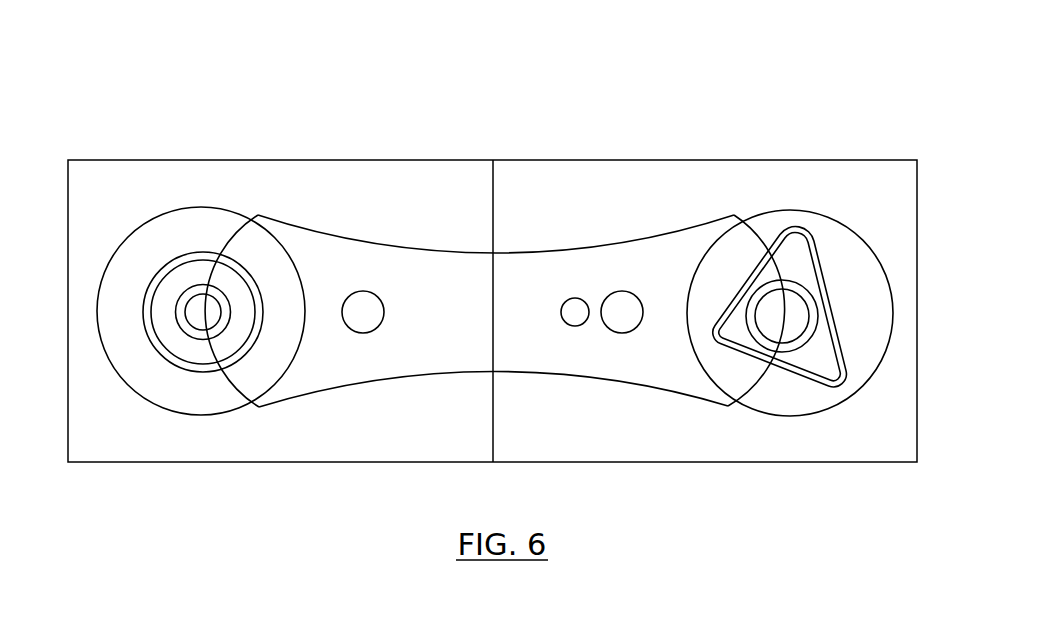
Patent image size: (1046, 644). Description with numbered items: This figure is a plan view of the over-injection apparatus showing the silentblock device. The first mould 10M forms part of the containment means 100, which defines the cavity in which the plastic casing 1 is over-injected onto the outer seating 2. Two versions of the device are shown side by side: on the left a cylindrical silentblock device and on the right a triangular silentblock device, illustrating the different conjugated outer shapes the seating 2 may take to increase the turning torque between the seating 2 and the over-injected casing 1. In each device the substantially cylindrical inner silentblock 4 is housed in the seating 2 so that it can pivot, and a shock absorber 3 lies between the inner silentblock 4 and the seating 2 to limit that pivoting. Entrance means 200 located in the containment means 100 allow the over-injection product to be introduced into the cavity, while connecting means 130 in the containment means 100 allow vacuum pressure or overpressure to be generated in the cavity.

The containment means 100 is at (438, 160).
The casing 1 is at (137, 258).
The outer silentblock seating 2 is at (183, 260).
The shock absorber 3 is at (208, 272).
The inner silentblock 4 is at (227, 313).
The entrance means 200 is at (368, 300).
The connecting means 130 is at (576, 305).
The first mould 10M is at (210, 450).